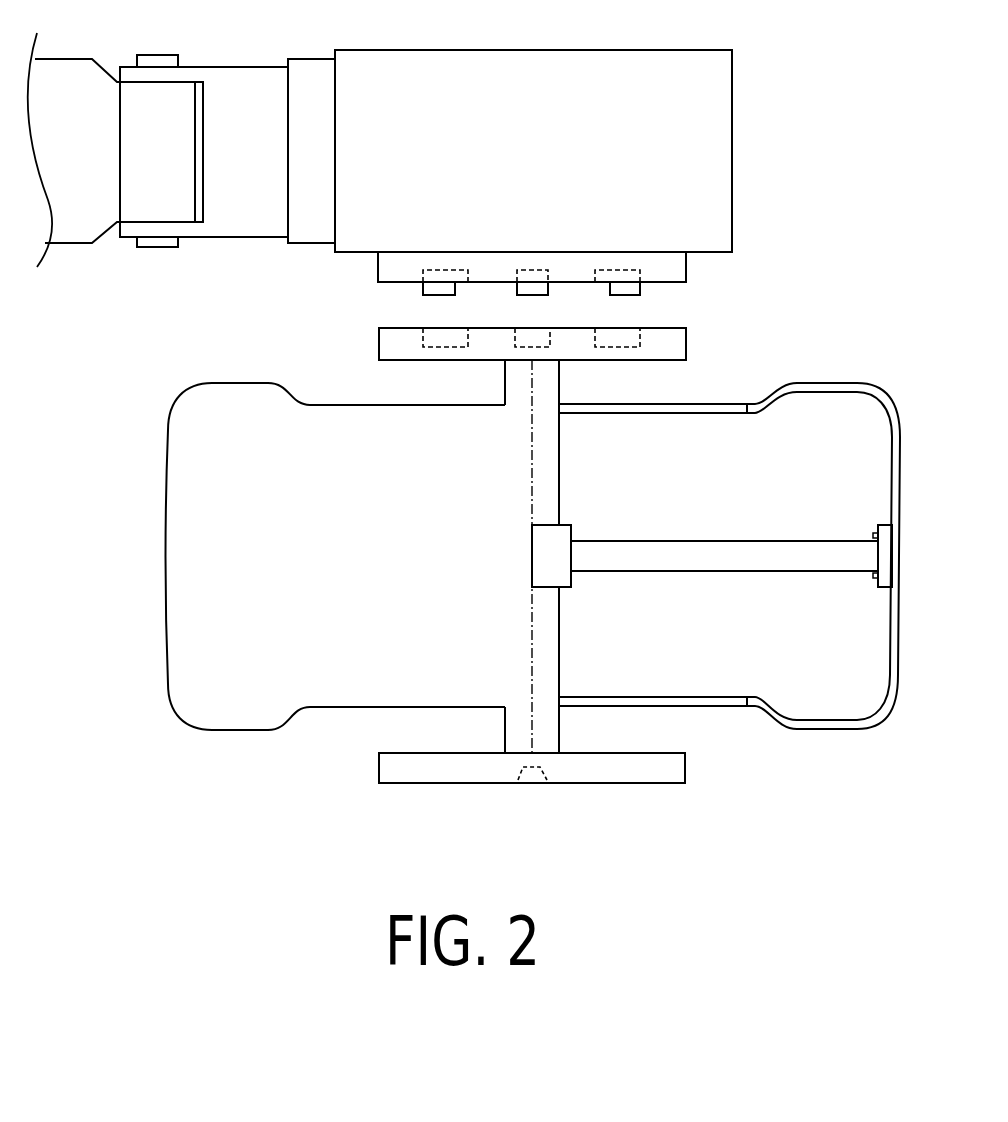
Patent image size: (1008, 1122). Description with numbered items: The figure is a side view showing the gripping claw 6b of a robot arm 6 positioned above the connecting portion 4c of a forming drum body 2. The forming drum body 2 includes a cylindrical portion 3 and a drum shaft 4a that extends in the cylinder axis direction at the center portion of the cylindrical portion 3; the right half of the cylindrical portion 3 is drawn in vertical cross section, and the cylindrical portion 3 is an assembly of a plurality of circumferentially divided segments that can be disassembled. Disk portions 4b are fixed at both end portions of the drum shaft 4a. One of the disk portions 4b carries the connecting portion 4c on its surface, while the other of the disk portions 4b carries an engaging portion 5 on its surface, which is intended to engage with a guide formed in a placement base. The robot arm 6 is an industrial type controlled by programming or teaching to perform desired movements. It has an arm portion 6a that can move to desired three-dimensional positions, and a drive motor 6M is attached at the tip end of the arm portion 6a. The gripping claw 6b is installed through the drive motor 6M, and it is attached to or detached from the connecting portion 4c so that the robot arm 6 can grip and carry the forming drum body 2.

The forming drum body 2 is at (825, 387).
The cylindrical portion 3 is at (198, 568).
The drum shaft 4a is at (548, 478).
The disk portions 4b is at (390, 343).
The connecting portion 4c is at (432, 334).
The engaging portion 5 is at (527, 786).
The robot arm 6 is at (181, 200).
The arm portion 6a is at (67, 244).
The gripping claw 6b is at (700, 315).
The drive motor 6M is at (713, 156).